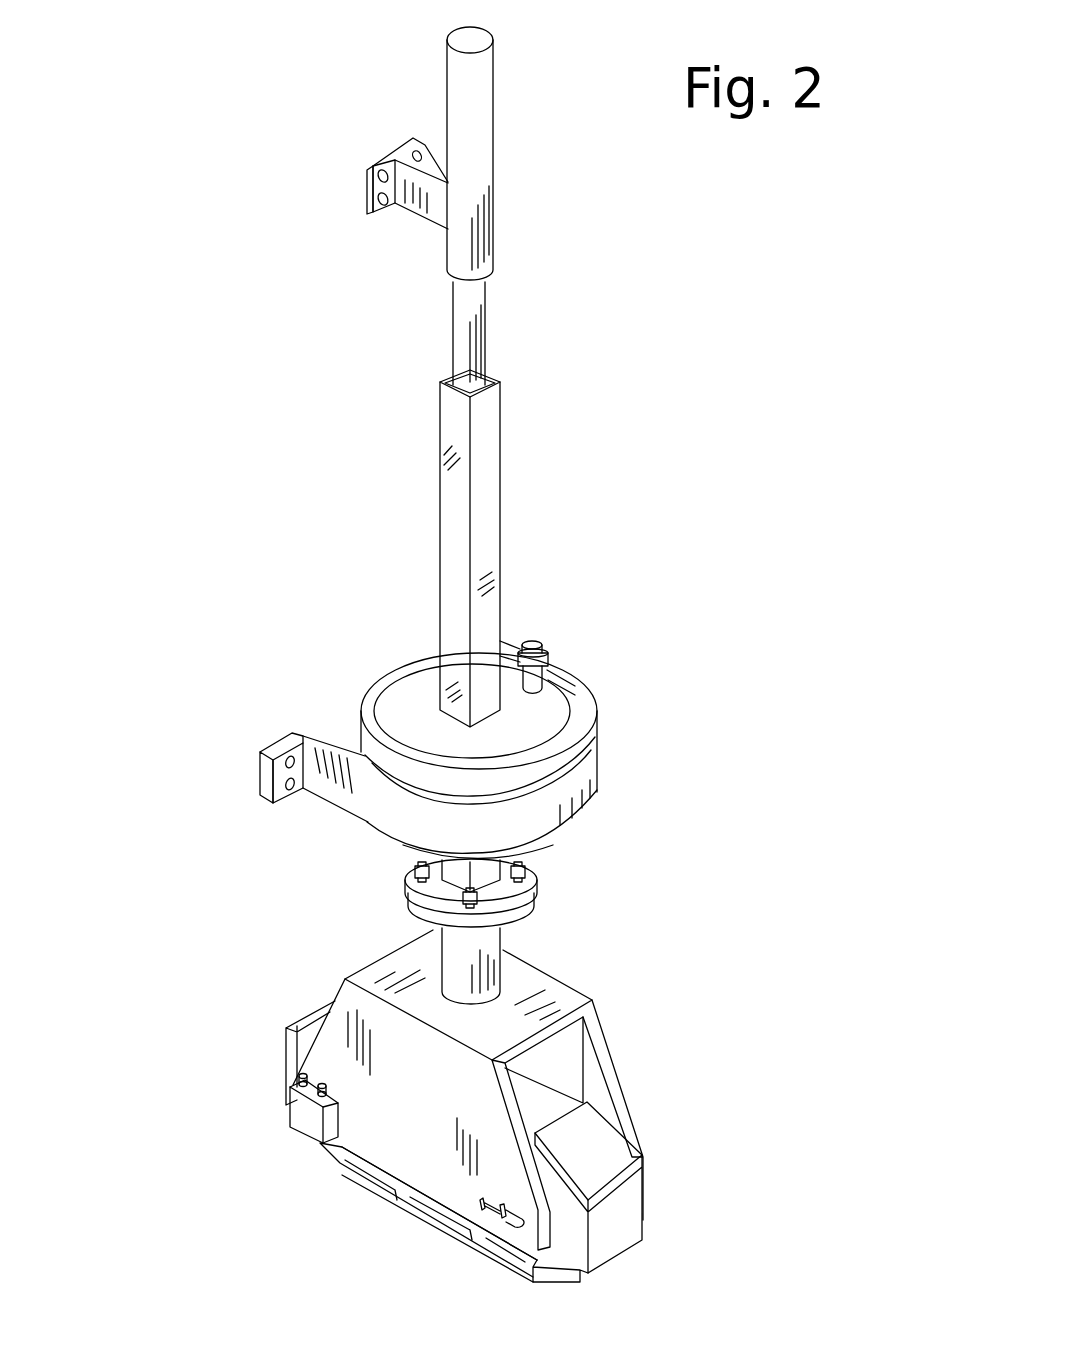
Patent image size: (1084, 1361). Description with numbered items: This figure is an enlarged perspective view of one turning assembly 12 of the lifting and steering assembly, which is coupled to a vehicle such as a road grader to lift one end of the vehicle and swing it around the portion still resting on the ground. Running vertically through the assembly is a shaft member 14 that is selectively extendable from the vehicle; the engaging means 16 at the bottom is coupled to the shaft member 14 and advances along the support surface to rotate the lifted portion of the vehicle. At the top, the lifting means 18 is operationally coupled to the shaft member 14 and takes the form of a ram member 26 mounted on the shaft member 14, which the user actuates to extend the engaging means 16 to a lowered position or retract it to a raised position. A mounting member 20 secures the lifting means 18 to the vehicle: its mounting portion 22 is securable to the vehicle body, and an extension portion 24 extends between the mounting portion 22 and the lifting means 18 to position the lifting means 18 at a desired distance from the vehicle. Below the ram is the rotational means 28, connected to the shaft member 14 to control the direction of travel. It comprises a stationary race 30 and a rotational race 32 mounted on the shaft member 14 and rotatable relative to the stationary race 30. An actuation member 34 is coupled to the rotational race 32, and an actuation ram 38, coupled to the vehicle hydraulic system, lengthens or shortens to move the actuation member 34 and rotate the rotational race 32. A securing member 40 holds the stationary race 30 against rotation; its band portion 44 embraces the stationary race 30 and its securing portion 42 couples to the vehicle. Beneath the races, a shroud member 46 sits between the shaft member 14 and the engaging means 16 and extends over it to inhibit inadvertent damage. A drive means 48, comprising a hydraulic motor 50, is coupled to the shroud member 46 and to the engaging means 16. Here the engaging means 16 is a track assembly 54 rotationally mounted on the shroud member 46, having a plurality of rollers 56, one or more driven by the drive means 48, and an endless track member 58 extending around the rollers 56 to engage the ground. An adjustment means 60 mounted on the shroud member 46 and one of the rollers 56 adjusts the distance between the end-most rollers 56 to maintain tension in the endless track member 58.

The turning assembly 12 is at (248, 178).
The shaft member 14 is at (490, 536).
The engaging means 16 is at (527, 1111).
The lifting means 18 is at (547, 208).
The mounting member 20 is at (309, 189).
The mounting portion 22 is at (420, 137).
The extension portion 24 is at (427, 217).
The ram member 26 is at (470, 162).
The rotational means 28 is at (454, 679).
The stationary race 30 is at (413, 657).
The rotational race 32 is at (393, 708).
The actuation member 34 is at (580, 690).
The actuation ram 38 is at (534, 640).
The securing member 40 is at (260, 752).
The securing portion 42 is at (260, 795).
The band portion 44 is at (563, 800).
The shroud member 46 is at (573, 993).
The drive means 48 is at (298, 1152).
The hydraulic motor 50 is at (307, 1113).
The track assembly 54 is at (640, 1218).
The rollers 56 is at (306, 1046).
The endless track member 58 is at (428, 1210).
The adjustment means 60 is at (510, 1178).